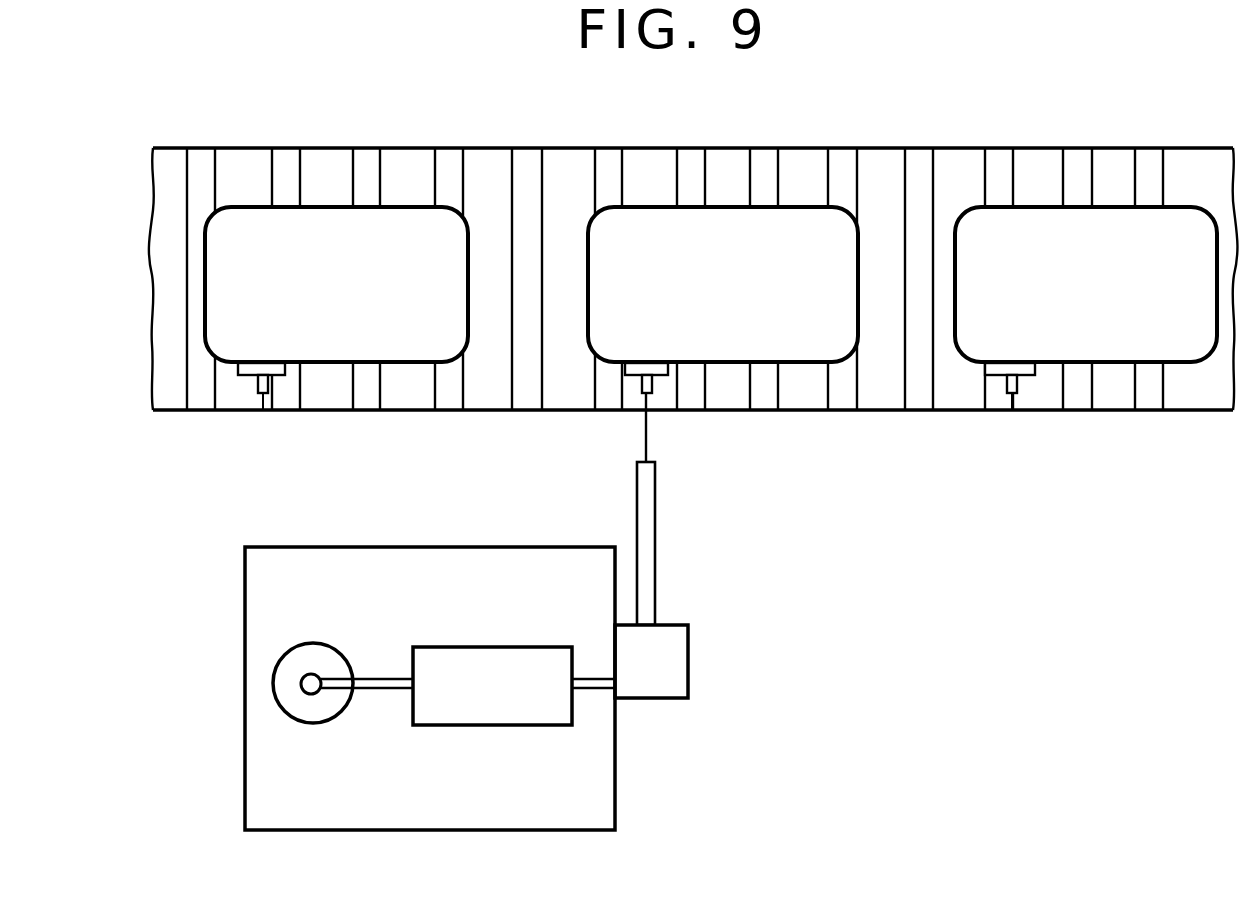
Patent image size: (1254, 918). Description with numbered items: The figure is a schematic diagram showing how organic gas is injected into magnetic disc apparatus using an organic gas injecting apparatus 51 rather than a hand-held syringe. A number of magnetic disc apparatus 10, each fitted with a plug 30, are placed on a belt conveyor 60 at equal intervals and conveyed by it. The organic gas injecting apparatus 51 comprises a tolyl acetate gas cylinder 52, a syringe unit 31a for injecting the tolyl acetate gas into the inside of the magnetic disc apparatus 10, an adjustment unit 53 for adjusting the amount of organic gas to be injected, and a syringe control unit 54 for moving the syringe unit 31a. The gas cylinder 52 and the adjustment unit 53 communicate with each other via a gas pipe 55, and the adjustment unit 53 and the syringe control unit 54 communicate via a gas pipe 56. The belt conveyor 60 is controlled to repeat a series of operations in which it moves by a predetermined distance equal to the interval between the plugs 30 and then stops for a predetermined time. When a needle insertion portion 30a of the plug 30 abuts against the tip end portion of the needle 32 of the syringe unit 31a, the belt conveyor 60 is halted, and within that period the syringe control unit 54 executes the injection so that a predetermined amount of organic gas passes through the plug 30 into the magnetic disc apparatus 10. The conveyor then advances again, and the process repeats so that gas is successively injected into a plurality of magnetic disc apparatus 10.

The magnetic disc apparatus 10 is at (316, 207).
The plug 30 is at (257, 384).
The needle insertion portion 30a is at (265, 400).
The syringe unit 31a is at (656, 546).
The needle 32 is at (642, 443).
The organic gas injecting apparatus 51 is at (413, 834).
The tolyl acetate gas cylinder 52 is at (310, 724).
The adjustment unit 53 is at (490, 726).
The syringe control unit 54 is at (690, 661).
The gas pipe 55 is at (378, 690).
The gas pipe 56 is at (590, 690).
The belt conveyor 60 is at (1113, 411).